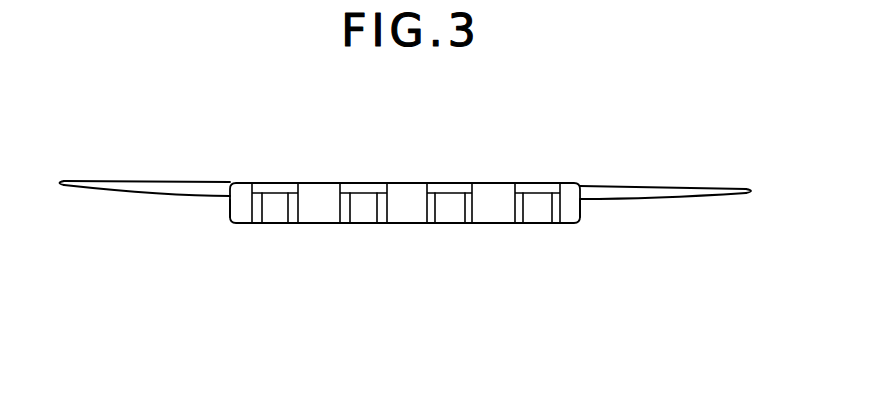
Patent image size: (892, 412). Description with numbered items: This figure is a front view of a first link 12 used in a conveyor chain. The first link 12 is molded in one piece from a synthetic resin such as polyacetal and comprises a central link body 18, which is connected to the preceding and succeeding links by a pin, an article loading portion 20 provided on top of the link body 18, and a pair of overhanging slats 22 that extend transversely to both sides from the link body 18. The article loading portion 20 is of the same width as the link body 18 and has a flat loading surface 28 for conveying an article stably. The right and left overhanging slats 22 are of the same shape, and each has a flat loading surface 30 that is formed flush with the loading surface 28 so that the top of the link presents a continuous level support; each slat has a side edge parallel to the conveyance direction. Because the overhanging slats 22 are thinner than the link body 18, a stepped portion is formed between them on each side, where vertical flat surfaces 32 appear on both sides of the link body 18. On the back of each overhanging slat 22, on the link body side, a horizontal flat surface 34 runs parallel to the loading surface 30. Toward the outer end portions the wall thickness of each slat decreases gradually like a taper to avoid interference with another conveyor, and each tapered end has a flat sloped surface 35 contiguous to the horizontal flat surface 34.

The first link 12 is at (716, 168).
The link body 18 is at (365, 212).
The article loading portion 20 is at (360, 184).
The overhanging slats 22 is at (204, 183).
The flat loading surface 28 is at (455, 184).
The flat loading surface 30 is at (141, 181).
The vertical flat surfaces 32 is at (234, 208).
The horizontal flat surface 34 is at (150, 197).
The flat sloped surface 35 is at (80, 189).